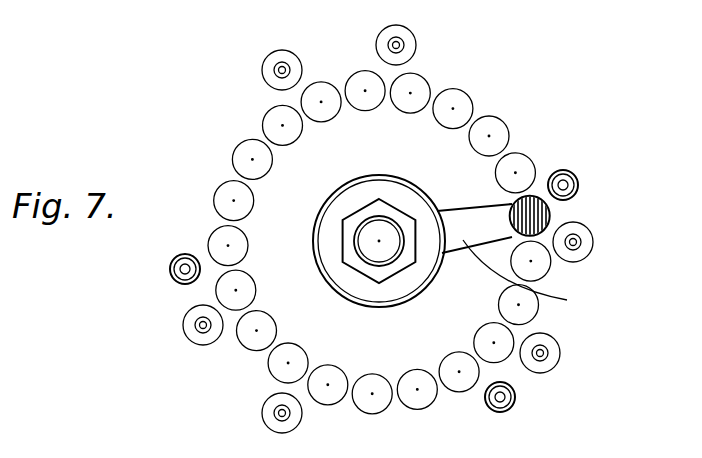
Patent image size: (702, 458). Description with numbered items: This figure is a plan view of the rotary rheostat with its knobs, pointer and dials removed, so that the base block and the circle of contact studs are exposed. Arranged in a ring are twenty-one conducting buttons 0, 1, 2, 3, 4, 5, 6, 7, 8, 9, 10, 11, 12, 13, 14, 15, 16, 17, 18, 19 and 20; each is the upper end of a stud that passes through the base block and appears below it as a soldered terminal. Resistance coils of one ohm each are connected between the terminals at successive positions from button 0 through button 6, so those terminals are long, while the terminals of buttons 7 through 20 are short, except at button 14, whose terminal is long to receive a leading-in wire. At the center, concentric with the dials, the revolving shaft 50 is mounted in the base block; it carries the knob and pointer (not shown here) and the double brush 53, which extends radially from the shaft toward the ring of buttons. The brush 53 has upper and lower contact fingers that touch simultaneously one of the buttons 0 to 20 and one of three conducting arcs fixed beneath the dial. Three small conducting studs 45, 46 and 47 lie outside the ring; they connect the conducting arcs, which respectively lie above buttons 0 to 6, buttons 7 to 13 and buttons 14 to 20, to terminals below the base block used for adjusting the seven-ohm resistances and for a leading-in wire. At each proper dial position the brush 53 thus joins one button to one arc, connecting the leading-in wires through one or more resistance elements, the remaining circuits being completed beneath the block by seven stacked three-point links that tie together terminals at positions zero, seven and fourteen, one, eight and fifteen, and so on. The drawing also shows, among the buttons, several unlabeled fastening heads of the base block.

The revolving shaft 50 is at (376, 233).
The double brush 53 is at (526, 276).
The conducting stud 45 is at (578, 178).
The conducting stud 46 is at (515, 400).
The conducting stud 47 is at (170, 277).
The contact button 0 is at (358, 74).
The contact button 1 is at (414, 82).
The contact button 2 is at (458, 98).
The contact button 3 is at (495, 126).
The contact button 4 is at (523, 164).
The contact button 5 is at (550, 216).
The contact button 6 is at (539, 262).
The contact button 7 is at (505, 300).
The contact button 8 is at (482, 334).
The contact button 9 is at (462, 385).
The contact button 10 is at (418, 402).
The contact button 11 is at (370, 406).
The contact button 12 is at (331, 378).
The contact button 13 is at (276, 368).
The contact button 14 is at (242, 334).
The contact button 15 is at (250, 286).
The contact button 16 is at (215, 242).
The contact button 17 is at (221, 197).
The contact button 18 is at (240, 152).
The contact button 19 is at (291, 125).
The contact button 20 is at (330, 113).